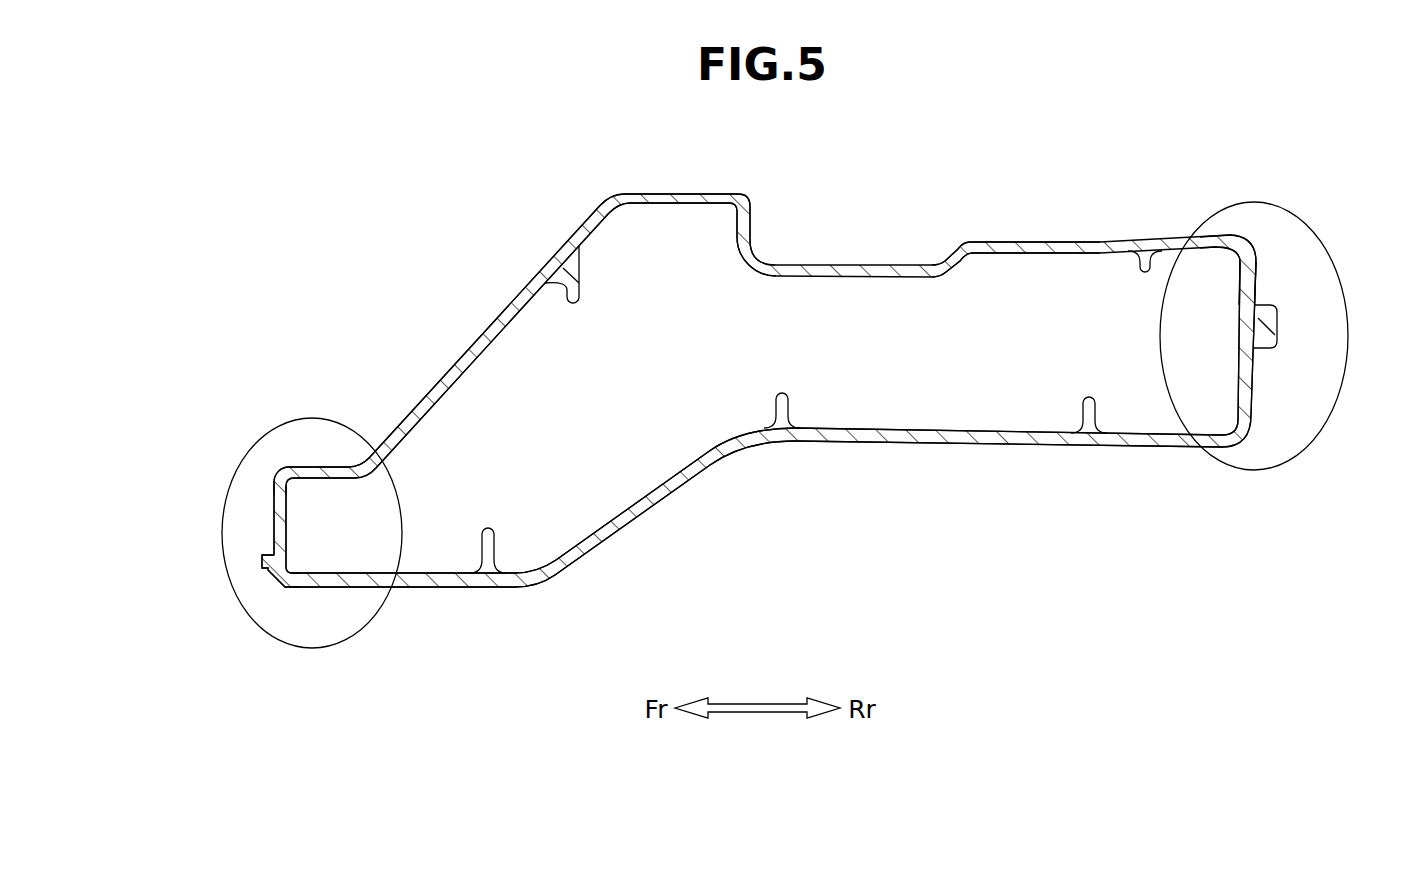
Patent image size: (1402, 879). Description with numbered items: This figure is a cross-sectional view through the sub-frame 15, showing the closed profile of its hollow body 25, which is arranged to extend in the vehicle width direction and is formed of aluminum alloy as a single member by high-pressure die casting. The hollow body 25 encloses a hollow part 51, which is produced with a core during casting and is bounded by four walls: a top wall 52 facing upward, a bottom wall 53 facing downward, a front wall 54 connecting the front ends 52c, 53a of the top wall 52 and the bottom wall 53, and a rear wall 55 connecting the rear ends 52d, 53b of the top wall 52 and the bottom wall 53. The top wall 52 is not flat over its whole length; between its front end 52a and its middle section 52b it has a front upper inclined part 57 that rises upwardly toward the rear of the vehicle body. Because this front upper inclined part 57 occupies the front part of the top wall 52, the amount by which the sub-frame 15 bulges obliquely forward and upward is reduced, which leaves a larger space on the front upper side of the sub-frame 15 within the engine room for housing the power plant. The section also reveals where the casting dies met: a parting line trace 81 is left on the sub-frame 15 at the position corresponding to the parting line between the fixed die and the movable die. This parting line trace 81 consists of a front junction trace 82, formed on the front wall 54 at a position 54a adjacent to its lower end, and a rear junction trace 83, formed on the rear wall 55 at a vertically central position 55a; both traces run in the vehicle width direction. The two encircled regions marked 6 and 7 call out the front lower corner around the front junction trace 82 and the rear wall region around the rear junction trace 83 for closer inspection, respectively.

The sub-frame 15 is at (1060, 117).
The hollow body 25 is at (1103, 238).
The hollow part 51 is at (881, 372).
The top wall 52 is at (983, 243).
The front end 52a is at (347, 470).
The middle section 52b is at (627, 192).
The front end 52c is at (293, 470).
The rear end 52d is at (1240, 238).
The bottom wall 53 is at (862, 443).
The front end 53a is at (295, 585).
The rear end 53b is at (1220, 450).
The front wall 54 is at (275, 512).
The position adjacent to lower end 54a is at (272, 582).
The rear wall 55 is at (1258, 367).
The vertically central position 55a is at (1253, 302).
The front upper inclined part 57 is at (468, 345).
The parting line trace 81 is at (257, 557).
The front junction trace 82 is at (257, 568).
The rear junction trace 83 is at (1273, 323).
The detail region of FIG. 6 is at (235, 476).
The detail region of FIG. 7 is at (1325, 255).